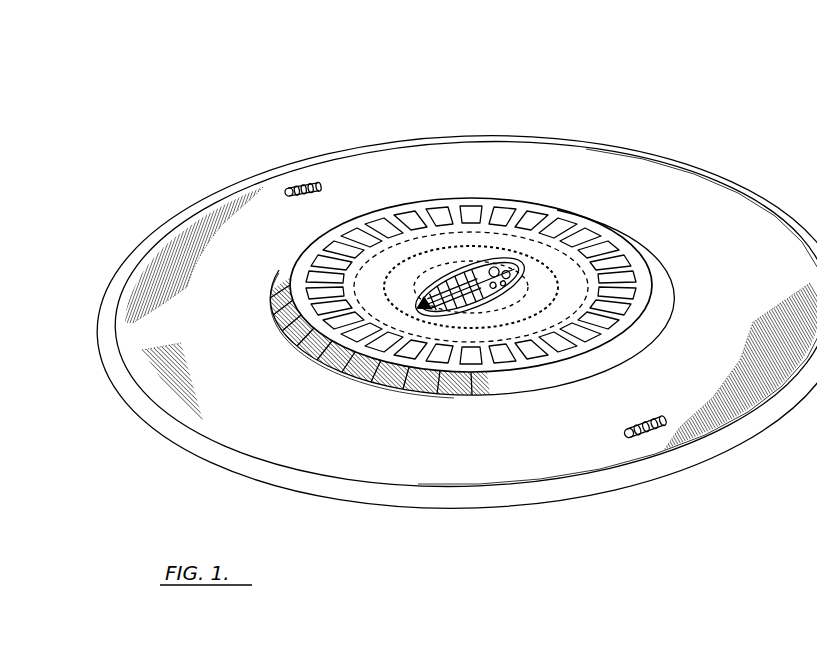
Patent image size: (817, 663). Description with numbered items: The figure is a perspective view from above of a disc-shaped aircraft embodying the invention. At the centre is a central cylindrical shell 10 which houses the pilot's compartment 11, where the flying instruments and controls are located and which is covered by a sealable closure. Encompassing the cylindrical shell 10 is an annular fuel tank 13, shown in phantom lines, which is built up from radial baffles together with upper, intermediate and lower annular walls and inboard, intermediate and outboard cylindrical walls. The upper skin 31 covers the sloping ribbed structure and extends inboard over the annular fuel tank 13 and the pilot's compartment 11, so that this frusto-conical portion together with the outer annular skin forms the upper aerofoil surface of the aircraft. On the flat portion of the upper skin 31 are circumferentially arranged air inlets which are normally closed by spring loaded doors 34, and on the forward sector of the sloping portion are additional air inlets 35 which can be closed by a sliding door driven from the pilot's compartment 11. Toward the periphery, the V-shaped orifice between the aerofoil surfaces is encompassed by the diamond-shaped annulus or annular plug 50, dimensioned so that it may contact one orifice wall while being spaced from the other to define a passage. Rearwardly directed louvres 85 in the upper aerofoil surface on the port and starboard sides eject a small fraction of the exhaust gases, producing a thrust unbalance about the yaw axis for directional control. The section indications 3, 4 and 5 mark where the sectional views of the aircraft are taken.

The central cylindrical shell 10 is at (295, 455).
The annulus or annular plug 50 is at (422, 498).
The pilot's compartment 11 is at (446, 288).
The upper skin 31 is at (471, 212).
The spring loaded doors 34 is at (568, 221).
The additional air inlets 35 is at (388, 382).
The annular fuel tank 13 is at (517, 322).
The louvres 85 is at (628, 437).
The section line 3- 3 is at (226, 154).
The section line 4- 4 is at (244, 166).
The section line 5- 5 is at (763, 170).